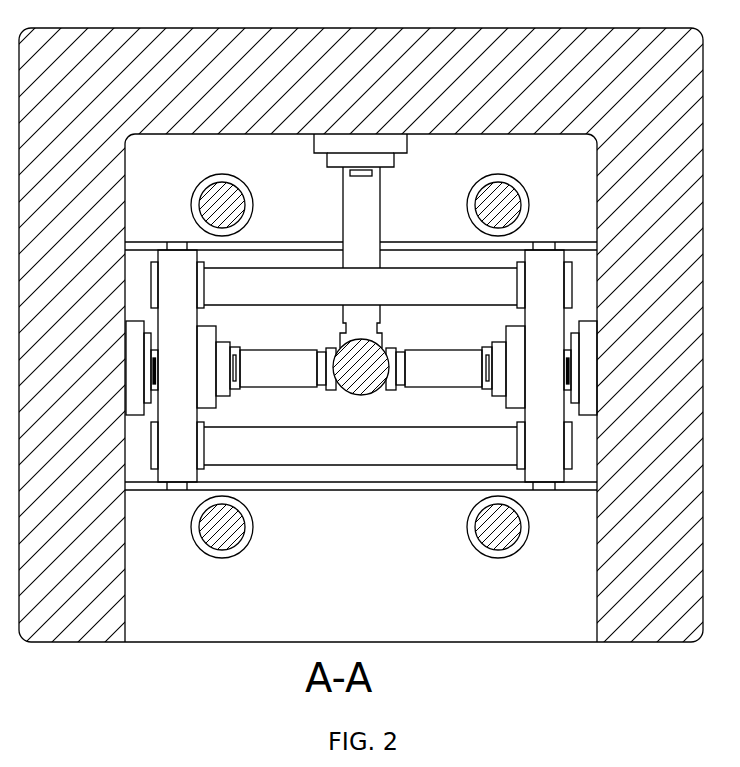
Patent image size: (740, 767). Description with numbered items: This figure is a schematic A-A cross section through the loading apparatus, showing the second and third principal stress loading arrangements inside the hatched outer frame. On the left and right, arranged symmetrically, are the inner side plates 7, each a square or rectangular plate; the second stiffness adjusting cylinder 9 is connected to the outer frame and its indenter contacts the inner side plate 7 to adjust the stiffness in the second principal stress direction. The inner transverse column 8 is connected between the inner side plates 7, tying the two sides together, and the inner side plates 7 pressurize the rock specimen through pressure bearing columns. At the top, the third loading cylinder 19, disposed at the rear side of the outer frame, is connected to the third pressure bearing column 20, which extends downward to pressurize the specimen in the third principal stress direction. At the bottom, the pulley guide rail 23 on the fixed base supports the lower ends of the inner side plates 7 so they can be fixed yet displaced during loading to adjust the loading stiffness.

The inner side plate 7 is at (540, 471).
The inner transverse column 8 is at (302, 459).
The second stiffness adjusting cylinder 9 is at (140, 353).
The third loading cylinder 19 is at (393, 156).
The third pressure bearing column 20 is at (356, 210).
The pulley guide rail 23 is at (368, 484).